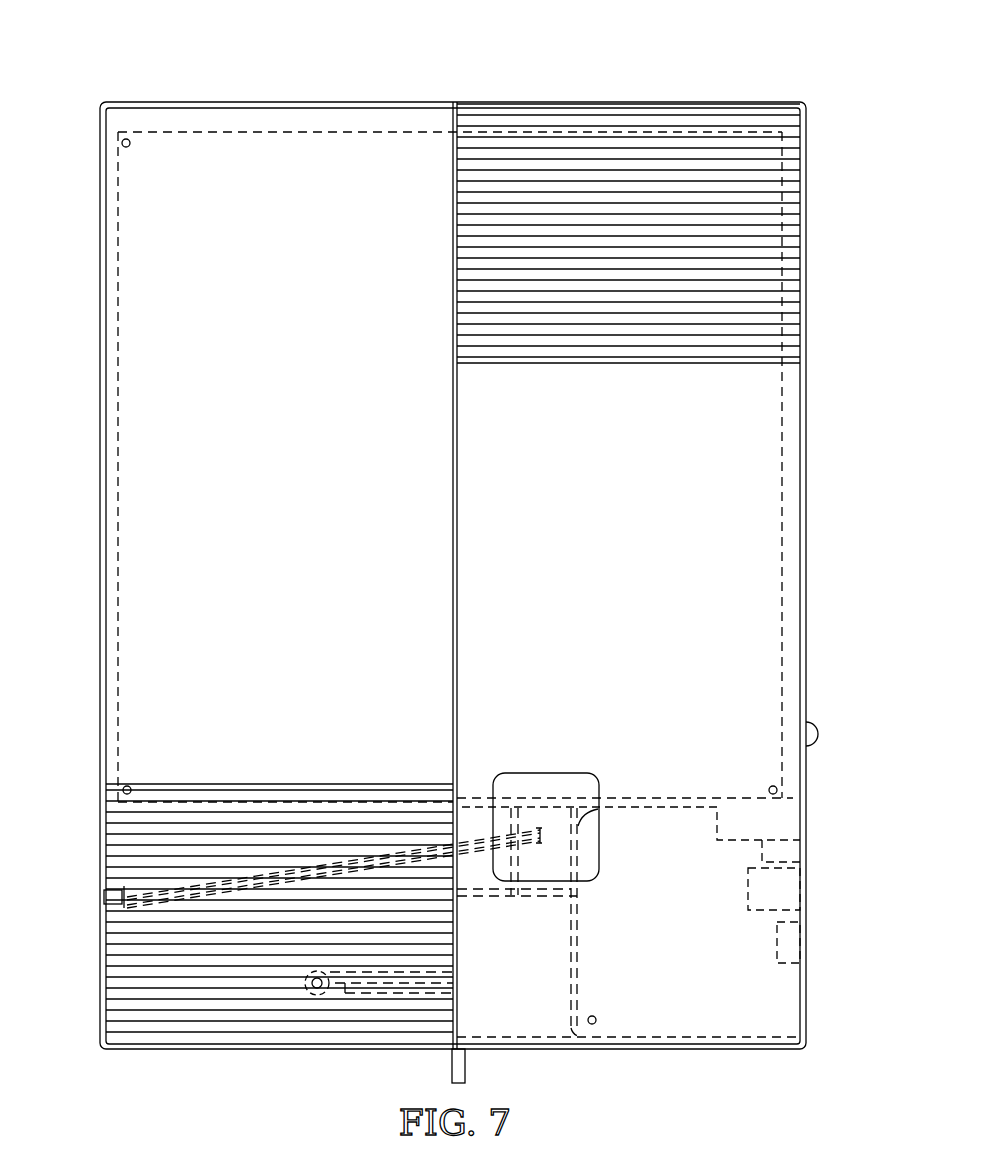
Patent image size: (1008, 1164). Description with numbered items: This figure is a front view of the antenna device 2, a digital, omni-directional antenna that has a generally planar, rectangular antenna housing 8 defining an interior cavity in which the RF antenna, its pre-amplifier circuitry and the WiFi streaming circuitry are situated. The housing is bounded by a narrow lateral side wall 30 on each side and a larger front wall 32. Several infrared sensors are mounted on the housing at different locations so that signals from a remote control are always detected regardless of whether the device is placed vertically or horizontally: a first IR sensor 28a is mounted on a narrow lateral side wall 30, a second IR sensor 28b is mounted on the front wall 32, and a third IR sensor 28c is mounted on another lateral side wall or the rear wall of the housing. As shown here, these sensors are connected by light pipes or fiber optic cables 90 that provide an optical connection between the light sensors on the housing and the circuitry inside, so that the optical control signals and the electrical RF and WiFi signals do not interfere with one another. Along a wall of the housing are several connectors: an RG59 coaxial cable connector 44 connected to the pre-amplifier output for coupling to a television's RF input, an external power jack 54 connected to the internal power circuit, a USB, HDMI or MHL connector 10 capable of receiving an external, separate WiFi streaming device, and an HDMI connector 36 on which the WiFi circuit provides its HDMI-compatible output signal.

The antenna device 2 is at (180, 70).
The antenna housing 8 is at (806, 212).
The narrow lateral side wall 30 is at (100, 246).
The front wall 32 is at (742, 503).
The first IR sensor 28a is at (812, 736).
The RG59 coaxial cable connector 44 is at (806, 818).
The external power jack 54 is at (806, 853).
The USB, HDMI or MHL connector 10 is at (806, 889).
The HDMI connector 36 is at (806, 942).
The third IR sensor 28c is at (102, 897).
The light pipes or fiber optic cables 90 is at (163, 898).
The second IR sensor 28b is at (306, 990).